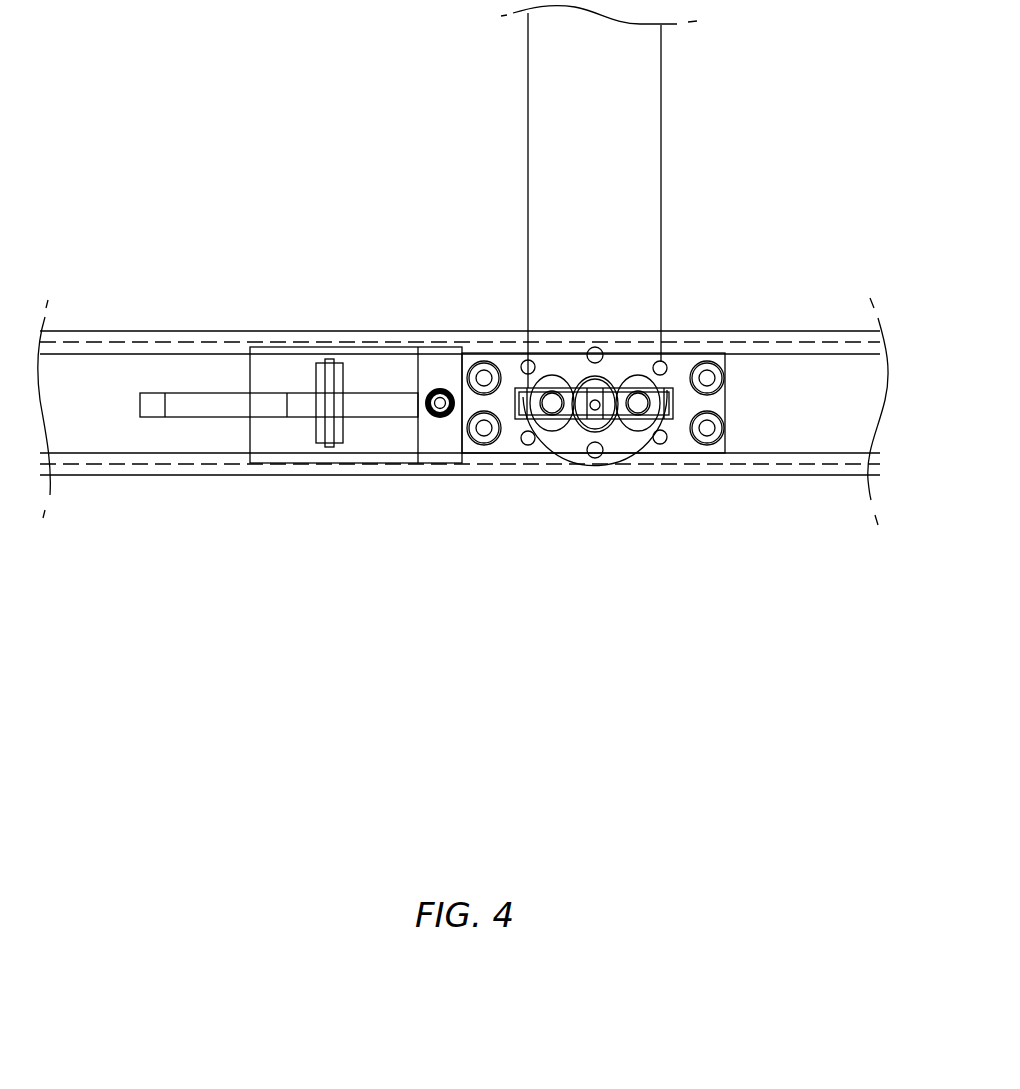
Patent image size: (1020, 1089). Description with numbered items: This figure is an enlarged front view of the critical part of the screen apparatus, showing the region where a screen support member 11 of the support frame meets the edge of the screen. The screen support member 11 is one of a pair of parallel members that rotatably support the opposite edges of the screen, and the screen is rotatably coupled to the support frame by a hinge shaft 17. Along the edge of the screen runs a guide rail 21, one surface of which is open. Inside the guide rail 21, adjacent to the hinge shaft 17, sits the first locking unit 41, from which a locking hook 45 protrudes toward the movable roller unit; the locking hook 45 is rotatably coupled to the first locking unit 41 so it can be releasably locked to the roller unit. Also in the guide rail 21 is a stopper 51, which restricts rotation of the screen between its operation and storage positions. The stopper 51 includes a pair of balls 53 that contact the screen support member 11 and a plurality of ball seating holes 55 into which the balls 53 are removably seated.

The screen support member 11 is at (651, 110).
The hinge shaft 17 is at (598, 410).
The guide rail 21 is at (122, 335).
The first locking unit 41 is at (367, 440).
The locking hook 45 is at (152, 407).
The stopper 51 is at (753, 283).
The ball 53 is at (550, 376).
The ball seating hole 55 is at (594, 350).